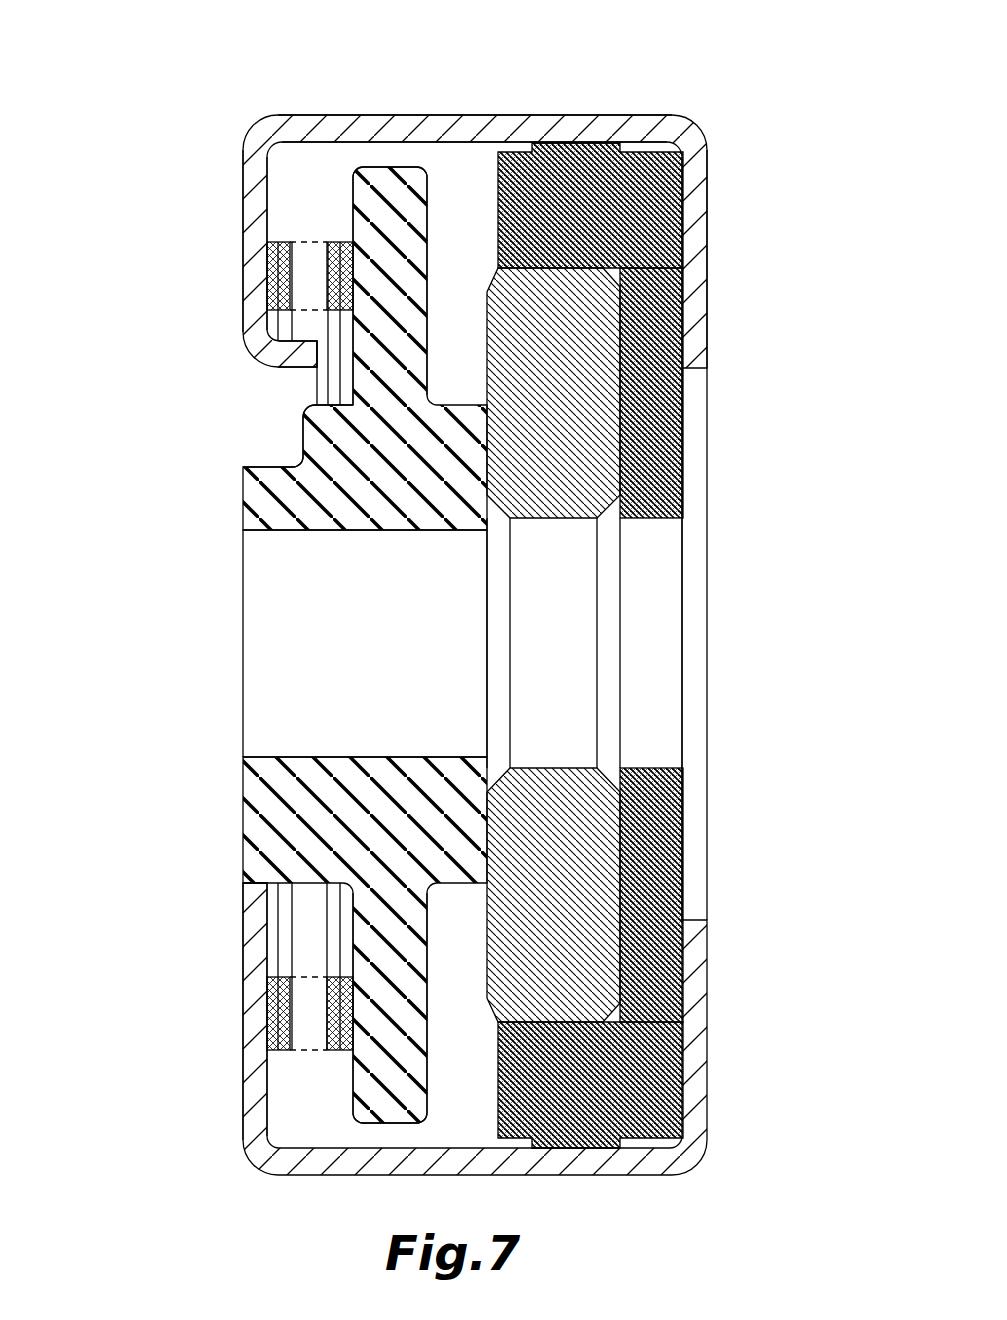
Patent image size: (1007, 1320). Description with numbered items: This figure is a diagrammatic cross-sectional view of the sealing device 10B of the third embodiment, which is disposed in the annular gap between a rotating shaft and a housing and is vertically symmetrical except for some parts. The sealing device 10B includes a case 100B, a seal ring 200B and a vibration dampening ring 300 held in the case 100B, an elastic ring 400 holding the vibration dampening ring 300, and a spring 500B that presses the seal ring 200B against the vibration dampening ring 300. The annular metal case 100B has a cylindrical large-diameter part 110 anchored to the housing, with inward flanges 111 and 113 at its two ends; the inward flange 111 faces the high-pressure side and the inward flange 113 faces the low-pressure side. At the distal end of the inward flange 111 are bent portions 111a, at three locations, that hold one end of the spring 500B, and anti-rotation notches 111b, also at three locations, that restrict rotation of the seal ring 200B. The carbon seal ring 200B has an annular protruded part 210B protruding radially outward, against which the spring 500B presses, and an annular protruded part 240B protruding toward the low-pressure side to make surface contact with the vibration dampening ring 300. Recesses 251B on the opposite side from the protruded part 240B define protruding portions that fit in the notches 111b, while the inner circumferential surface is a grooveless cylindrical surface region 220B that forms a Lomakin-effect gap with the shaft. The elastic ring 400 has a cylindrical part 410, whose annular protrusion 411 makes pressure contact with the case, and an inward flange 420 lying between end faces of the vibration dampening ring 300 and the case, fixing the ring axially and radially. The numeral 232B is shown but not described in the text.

The sealing device 10B is at (636, 80).
The case 100B is at (232, 159).
The large-diameter part 110 is at (472, 115).
The inward flange 111 is at (262, 215).
The bent portion 111a is at (295, 358).
The anti-rotation notch 111b is at (268, 883).
The inward flange 113 is at (690, 222).
The seal ring 200B is at (234, 499).
The annular protruded part 210B is at (385, 200).
The cylindrical surface region 220B is at (302, 530).
The rotor fastening portion 232B is at (262, 886).
The annular protruded part 240B is at (685, 497).
The recess 251B is at (273, 467).
The vibration dampening ring 300 is at (548, 505).
The elastic ring 400 is at (692, 411).
The cylindrical part 410 is at (630, 192).
The annular protrusion 411 is at (597, 142).
The inward flange 420 is at (685, 317).
The spring 500B is at (305, 272).